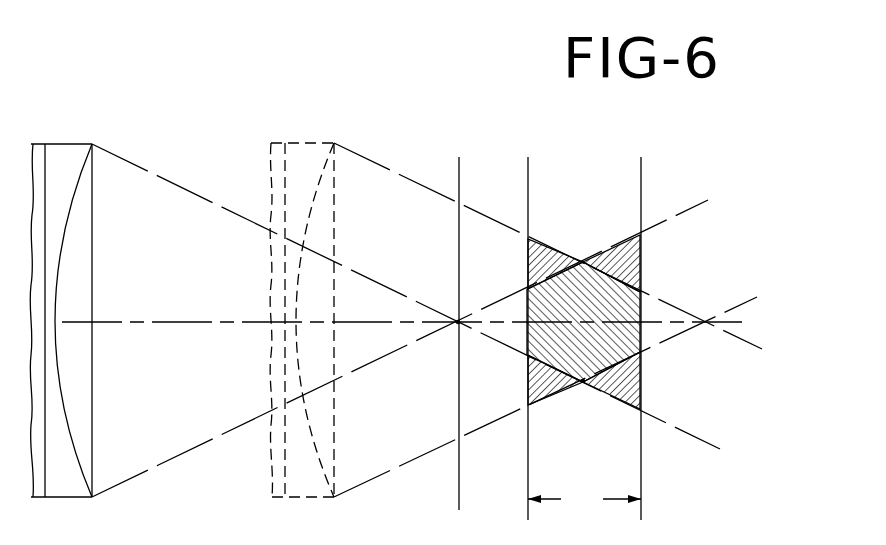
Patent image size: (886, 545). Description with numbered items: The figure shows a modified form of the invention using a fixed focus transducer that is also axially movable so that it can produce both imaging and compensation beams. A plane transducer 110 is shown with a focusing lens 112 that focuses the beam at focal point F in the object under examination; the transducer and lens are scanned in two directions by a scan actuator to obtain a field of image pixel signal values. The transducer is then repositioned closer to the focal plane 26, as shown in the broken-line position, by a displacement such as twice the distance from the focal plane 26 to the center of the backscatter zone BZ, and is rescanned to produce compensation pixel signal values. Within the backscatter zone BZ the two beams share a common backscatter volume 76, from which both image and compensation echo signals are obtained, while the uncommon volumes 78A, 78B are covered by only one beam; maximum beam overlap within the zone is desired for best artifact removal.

The plane transducer 110 is at (33, 143).
The focusing lens 112 is at (78, 143).
The focal plane 26 is at (459, 165).
The focal point F is at (456, 326).
The uncommon volume 78A is at (540, 243).
The uncommon volume 78B is at (642, 268).
The common backscatter volume 76 is at (583, 383).
The backscatter zone BZ is at (584, 500).